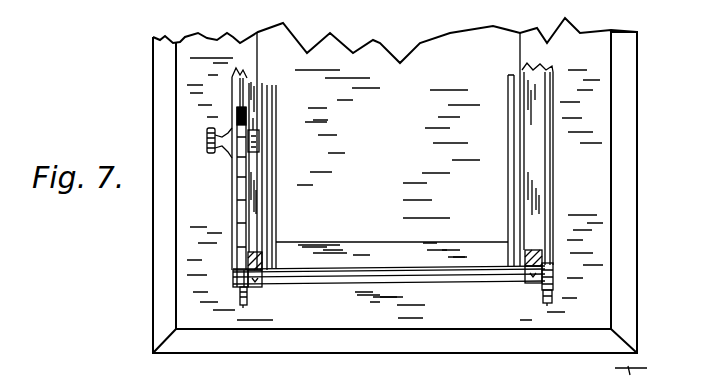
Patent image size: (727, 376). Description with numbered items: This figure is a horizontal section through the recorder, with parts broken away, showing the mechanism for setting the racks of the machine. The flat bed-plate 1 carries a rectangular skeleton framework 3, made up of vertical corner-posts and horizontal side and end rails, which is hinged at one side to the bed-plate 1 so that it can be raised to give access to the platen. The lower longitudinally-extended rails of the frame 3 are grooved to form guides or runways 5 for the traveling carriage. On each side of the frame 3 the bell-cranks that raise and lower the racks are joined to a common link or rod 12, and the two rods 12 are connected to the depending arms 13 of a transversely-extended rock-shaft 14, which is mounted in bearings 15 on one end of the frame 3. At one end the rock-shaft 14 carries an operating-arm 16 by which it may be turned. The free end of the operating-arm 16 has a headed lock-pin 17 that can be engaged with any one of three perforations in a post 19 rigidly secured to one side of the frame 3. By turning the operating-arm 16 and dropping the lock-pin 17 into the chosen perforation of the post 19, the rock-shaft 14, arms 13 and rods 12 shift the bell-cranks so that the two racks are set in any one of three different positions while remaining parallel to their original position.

The bed-plate 1 is at (188, 208).
The rectangular skeleton framework 3 is at (351, 256).
The guides or runways 5 is at (265, 170).
The common link or rod 12 is at (577, 50).
The depending arms 13 is at (250, 295).
The rock-shaft 14 is at (468, 278).
The bearings 15 is at (265, 287).
The operating-arm 16 is at (243, 200).
The headed lock-pin 17 is at (209, 153).
The post 19 is at (259, 140).